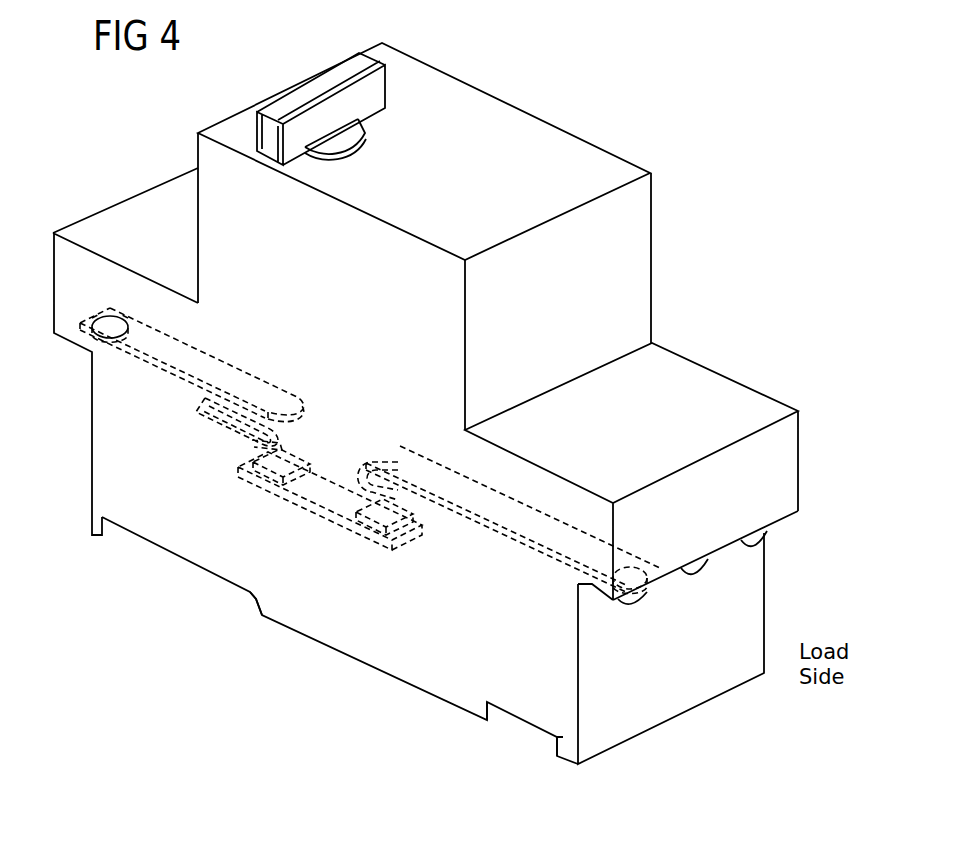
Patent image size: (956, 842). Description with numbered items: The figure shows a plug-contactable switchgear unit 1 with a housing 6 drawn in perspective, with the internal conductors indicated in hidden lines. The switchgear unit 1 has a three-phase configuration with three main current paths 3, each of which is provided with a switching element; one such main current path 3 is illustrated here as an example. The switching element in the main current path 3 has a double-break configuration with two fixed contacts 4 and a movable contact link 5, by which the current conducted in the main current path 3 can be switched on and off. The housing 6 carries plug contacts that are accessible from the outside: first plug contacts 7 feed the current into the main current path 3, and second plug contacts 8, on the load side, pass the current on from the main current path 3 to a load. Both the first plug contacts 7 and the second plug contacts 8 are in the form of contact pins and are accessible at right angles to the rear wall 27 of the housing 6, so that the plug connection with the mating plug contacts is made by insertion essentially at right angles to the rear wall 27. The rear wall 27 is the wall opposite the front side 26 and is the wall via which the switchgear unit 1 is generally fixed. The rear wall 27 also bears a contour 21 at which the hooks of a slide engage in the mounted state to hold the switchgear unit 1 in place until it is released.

The switchgear unit 1 is at (735, 270).
The main current path 3 is at (173, 373).
The fixed contact 4 is at (285, 441).
The movable contact link 5 is at (320, 502).
The housing 6 is at (784, 468).
The first plug contact 7 is at (107, 325).
The second plug contact 8 is at (645, 604).
The contour 21 is at (250, 594).
The front side 26 is at (507, 143).
The rear wall 27 is at (396, 694).